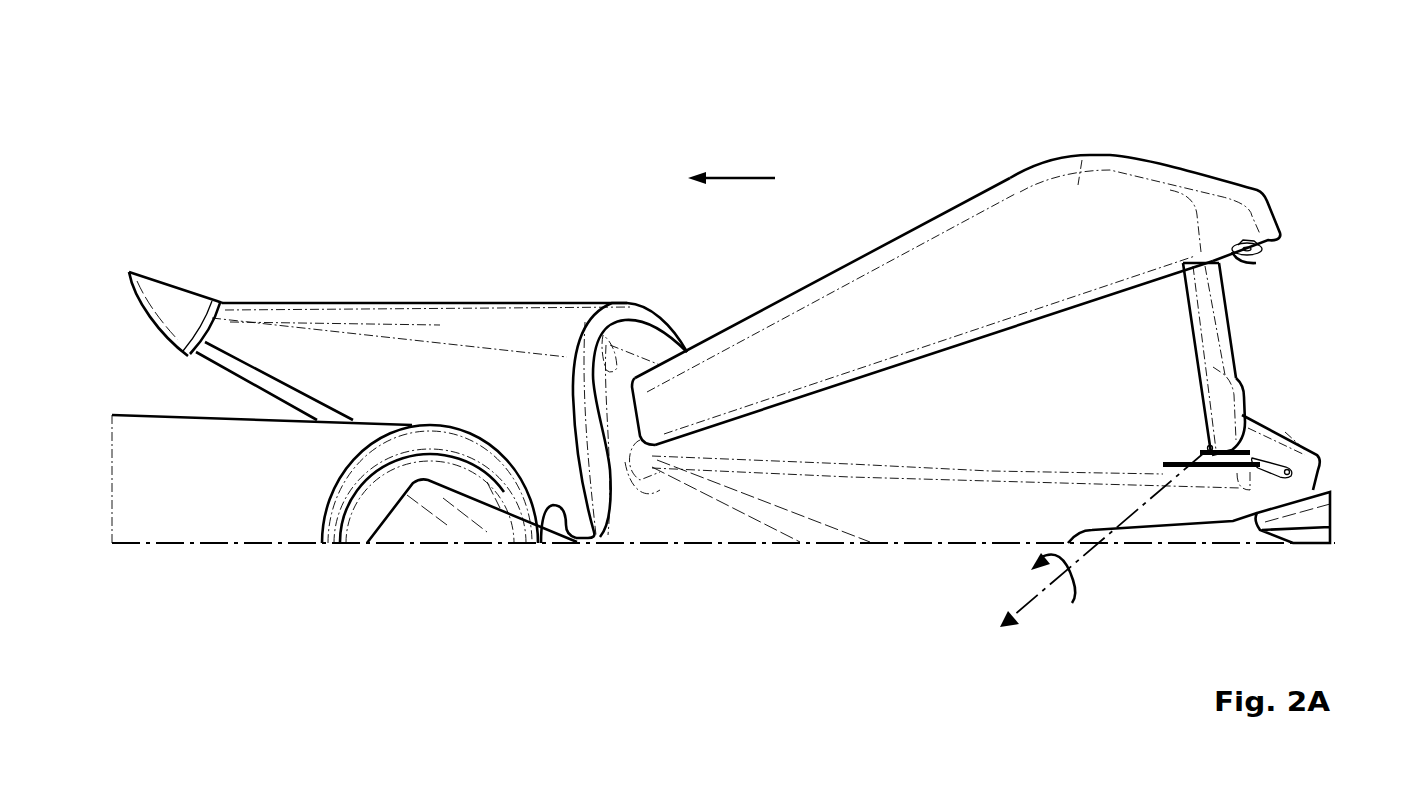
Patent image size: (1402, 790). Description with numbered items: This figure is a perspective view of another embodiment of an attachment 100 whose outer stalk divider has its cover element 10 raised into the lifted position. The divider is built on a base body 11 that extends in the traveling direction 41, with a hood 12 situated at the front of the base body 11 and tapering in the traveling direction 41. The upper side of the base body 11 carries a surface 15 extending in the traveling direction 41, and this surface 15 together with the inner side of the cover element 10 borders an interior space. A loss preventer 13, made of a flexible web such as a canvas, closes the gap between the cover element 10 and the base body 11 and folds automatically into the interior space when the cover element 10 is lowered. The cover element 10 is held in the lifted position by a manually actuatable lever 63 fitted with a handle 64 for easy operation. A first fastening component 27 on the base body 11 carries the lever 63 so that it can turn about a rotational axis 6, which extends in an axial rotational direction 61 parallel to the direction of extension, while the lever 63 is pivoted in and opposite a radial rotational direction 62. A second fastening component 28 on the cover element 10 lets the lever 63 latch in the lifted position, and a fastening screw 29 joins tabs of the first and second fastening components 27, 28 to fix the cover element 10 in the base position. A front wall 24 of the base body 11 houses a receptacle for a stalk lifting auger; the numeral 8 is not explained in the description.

The attachment 100 is at (530, 110).
The traveling direction 41 is at (738, 178).
The cover element 10 is at (938, 248).
The loss preventer 13 is at (1120, 325).
The hood 12 is at (448, 325).
The front wall 24 is at (633, 340).
The fastening screw 29 is at (1264, 246).
The second fastening component 28 is at (1240, 265).
The lever 63 is at (1210, 332).
The handle 64 is at (1222, 390).
The rotational axis 6 is at (1272, 415).
The first fastening component 27 is at (1294, 466).
The surface 15 is at (962, 466).
The housing 8 is at (233, 526).
The base body 11 is at (957, 525).
The radial rotational direction 62 is at (1073, 585).
The axial rotational direction 61 is at (1020, 618).